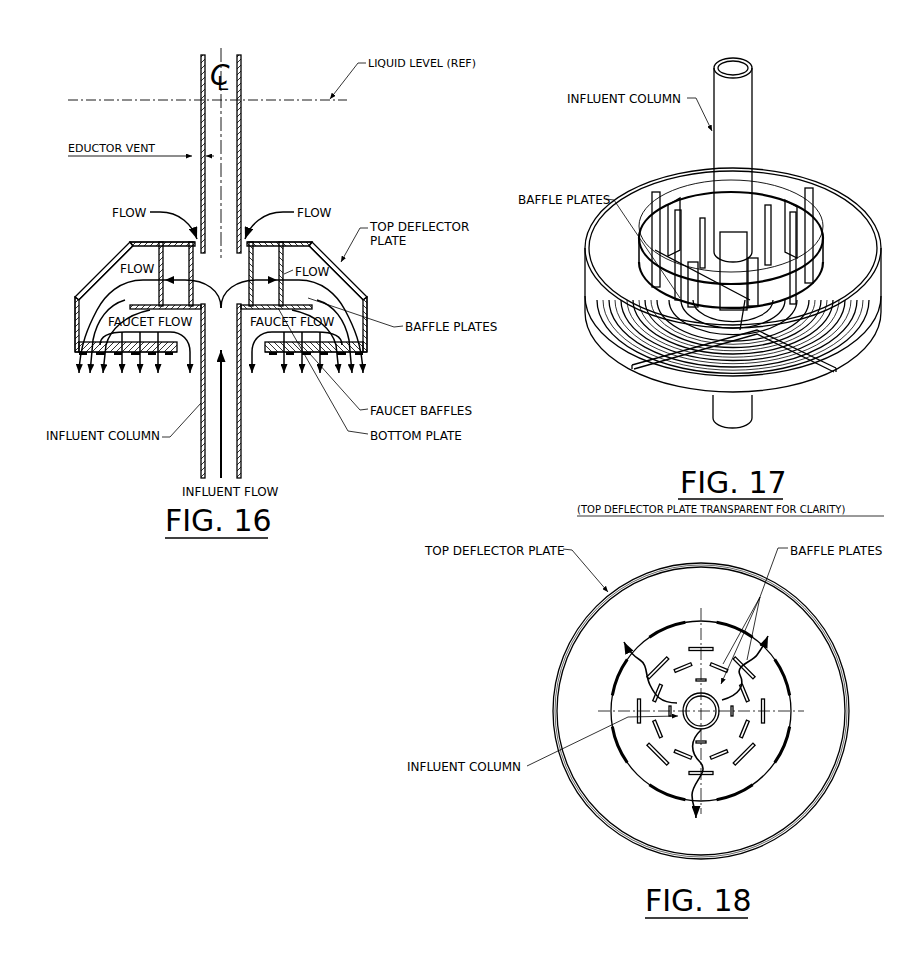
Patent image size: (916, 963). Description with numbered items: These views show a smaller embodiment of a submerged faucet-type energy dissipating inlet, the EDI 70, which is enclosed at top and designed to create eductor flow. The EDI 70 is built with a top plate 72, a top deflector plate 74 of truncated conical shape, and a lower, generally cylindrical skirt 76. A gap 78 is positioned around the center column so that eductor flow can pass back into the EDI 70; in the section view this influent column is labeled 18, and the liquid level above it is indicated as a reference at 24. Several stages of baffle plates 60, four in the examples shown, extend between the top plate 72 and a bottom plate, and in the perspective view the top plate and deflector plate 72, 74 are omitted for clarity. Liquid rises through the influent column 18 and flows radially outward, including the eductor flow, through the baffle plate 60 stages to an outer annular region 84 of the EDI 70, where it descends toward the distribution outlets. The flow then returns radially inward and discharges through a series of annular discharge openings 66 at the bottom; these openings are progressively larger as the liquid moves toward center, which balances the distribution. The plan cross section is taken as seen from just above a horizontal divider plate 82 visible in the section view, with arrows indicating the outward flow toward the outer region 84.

In FIG. 16, the influent column 18 is at (243, 433).
In FIG. 17, the influent column 18 is at (753, 105).
In FIG. 18, the influent column 18 is at (724, 703).
In FIG. 16, the liquid level 24 is at (153, 100).
In FIG. 16, the baffle plates 60 is at (192, 258).
In FIG. 18, the baffle plates 60 is at (753, 683).
In FIG. 16, the annular discharge openings 66 is at (112, 377).
In FIG. 17, the annular discharge openings 66 is at (815, 200).
In FIG. 16, the EDI 70 is at (92, 256).
In FIG. 17, the EDI 70 is at (624, 183).
In FIG. 18, the EDI 70 is at (548, 643).
In FIG. 16, the top plate 72 is at (299, 242).
In FIG. 16, the top deflector plate 74 is at (368, 294).
In FIG. 16, the skirt 76 is at (75, 326).
In FIG. 18, the skirt 76 is at (847, 713).
In FIG. 16, the gap 78 is at (246, 236).
In FIG. 16, the horizontal divider plate 82 is at (308, 306).
In FIG. 18, the horizontal divider plate 82 is at (758, 757).
In FIG. 18, the outer region 84 is at (815, 667).